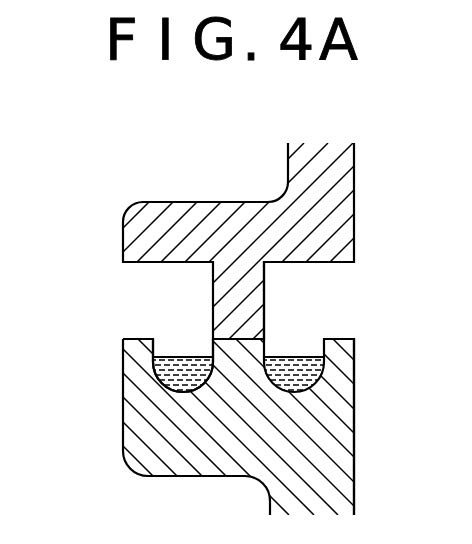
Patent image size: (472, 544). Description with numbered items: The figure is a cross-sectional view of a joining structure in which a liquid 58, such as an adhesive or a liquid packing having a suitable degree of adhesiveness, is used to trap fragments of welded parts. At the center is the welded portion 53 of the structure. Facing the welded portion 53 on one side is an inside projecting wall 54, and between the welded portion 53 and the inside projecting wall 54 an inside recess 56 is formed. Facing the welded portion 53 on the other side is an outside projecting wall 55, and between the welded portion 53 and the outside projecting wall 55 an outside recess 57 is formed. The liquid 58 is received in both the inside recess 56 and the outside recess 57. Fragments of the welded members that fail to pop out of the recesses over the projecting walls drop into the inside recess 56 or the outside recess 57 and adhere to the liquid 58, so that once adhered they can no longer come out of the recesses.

The welded portion 53 is at (213, 338).
The inside projecting wall 54 is at (338, 349).
The outside projecting wall 55 is at (137, 356).
The inside recess 56 is at (288, 340).
The outside recess 57 is at (183, 353).
The liquid 58 is at (175, 355).